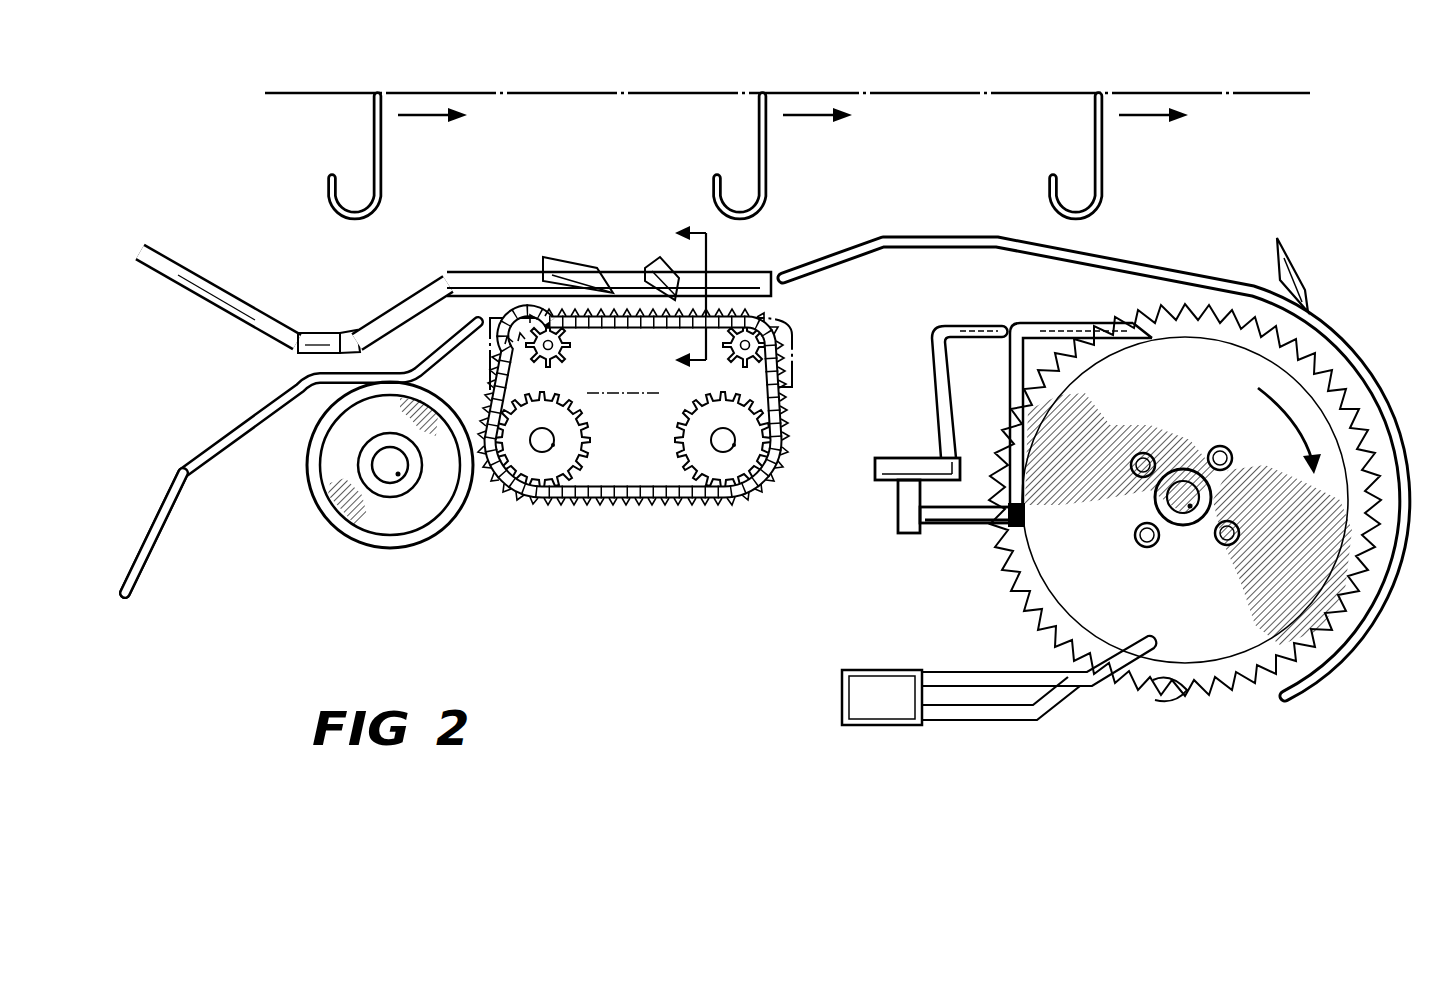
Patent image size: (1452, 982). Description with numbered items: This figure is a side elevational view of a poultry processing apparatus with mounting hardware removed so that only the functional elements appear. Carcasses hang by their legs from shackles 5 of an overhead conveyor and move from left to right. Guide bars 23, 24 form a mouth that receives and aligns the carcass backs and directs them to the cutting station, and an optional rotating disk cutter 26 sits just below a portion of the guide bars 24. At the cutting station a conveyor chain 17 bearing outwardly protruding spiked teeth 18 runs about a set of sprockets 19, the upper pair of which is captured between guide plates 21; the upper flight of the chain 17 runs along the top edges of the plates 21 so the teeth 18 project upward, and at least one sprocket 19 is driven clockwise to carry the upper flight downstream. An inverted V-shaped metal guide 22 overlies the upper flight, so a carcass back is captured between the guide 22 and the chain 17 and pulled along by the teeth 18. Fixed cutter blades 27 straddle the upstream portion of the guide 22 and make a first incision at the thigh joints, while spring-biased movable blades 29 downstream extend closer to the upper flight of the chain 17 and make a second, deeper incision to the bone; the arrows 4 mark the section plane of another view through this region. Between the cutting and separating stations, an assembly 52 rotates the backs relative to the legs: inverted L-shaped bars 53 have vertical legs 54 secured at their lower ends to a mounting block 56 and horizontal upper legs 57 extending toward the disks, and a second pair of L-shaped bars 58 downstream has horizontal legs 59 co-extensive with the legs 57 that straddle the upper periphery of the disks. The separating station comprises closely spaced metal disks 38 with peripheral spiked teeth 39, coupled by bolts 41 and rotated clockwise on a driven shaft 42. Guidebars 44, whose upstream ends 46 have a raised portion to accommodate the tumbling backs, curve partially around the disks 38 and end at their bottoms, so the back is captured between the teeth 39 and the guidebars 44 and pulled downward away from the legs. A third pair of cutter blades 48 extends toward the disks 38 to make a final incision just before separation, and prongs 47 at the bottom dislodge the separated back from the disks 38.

The section line 4- 4 is at (681, 300).
The shackles 5 is at (326, 160).
The conveyor chain 17 is at (655, 468).
The spiked teeth 18 is at (622, 497).
The sprockets 19 is at (578, 366).
The guide plates 21 is at (790, 322).
The inverted V-shaped metal guide 22 is at (730, 270).
The guide bar 23 is at (217, 295).
The guide bar 24 is at (150, 545).
The rotating disk cutter 26 is at (310, 468).
The fixed cutter blades 27 is at (585, 262).
The movable cutter blades 29 is at (655, 265).
The metal disks 38 is at (1161, 605).
The spiked teeth 39 is at (1175, 690).
The bolts 41 is at (1230, 520).
The driven shaft 42 is at (1183, 488).
The guidebars 44 is at (1356, 362).
The upstream ends 46 is at (848, 288).
The prongs 47 is at (982, 745).
The cutter blades 48 is at (1300, 262).
The assembly 52 is at (852, 465).
The inverted L-shaped metal bars 53 is at (917, 336).
The vertically oriented legs 54 is at (933, 383).
The mounting block 56 is at (883, 473).
The upper legs 57 is at (981, 322).
The second pair of L-shaped bars 58 is at (1034, 298).
The horizontally oriented legs 59 is at (1087, 345).